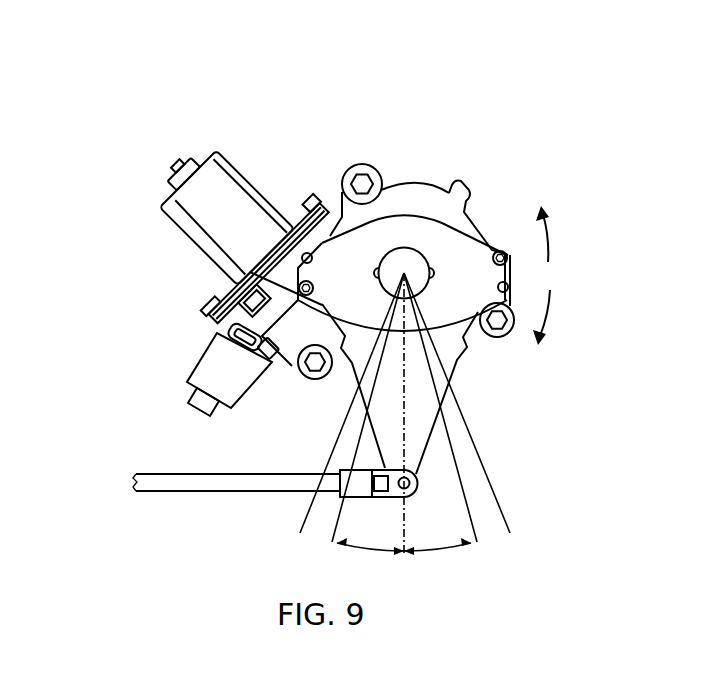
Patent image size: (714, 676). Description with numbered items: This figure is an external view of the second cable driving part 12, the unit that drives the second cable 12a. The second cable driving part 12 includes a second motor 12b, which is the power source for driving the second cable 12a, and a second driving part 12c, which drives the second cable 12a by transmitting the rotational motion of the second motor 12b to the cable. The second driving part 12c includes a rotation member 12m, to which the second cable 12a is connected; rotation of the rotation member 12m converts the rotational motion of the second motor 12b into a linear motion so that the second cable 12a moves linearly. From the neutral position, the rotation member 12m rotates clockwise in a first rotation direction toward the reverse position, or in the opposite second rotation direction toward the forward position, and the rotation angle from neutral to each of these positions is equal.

The second cable driving part 12 is at (71, 46).
The second cable 12a is at (200, 483).
The second motor 12b is at (204, 246).
The second driving part 12c is at (393, 293).
The rotation member 12m is at (466, 362).